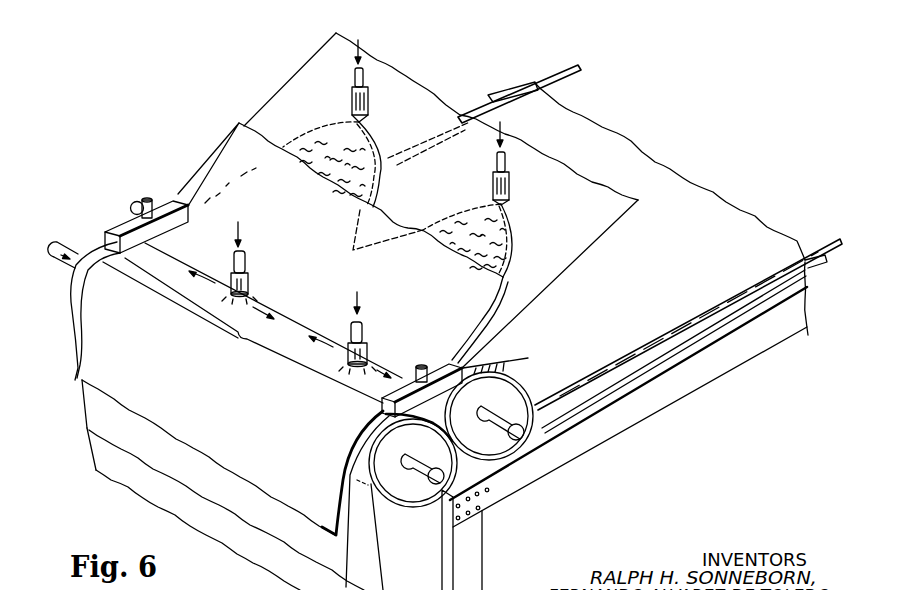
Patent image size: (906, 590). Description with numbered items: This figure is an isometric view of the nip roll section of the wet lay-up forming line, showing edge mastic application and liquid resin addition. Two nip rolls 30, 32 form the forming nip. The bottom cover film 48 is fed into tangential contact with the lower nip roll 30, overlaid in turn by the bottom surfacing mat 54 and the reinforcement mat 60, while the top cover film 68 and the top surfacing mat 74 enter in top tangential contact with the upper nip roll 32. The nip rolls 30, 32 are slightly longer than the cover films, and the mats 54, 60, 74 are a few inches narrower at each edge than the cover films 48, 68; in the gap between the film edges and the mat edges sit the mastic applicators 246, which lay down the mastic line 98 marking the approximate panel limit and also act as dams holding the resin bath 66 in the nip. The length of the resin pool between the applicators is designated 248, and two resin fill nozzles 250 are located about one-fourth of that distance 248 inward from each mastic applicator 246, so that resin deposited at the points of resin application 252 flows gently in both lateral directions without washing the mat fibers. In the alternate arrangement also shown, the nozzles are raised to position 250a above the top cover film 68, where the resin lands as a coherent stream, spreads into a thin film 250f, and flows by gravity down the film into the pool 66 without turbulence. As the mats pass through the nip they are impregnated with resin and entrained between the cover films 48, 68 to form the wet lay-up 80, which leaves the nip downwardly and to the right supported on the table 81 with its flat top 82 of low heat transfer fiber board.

The nip roll 30 is at (396, 500).
The nip roll 32 is at (528, 387).
The bottom cover film 48 is at (117, 480).
The bottom surfacing mat 54 is at (110, 443).
The reinforcement mat 60 is at (106, 395).
The resin bath 66 is at (292, 312).
The top cover film 68 is at (410, 80).
The top surfacing mat 74 is at (254, 130).
The wet lay-up 80 is at (660, 158).
The table 81 is at (621, 435).
The flat top 82 is at (680, 364).
The mastic line 98 is at (566, 73).
The mastic applicators 246 is at (128, 219).
The length of the resin pool 248 is at (232, 338).
The resin fill nozzles 250 is at (326, 289).
The alternate nozzle position 250a is at (352, 93).
The thin film of resin 250f is at (379, 163).
The points of resin application 252 is at (249, 283).